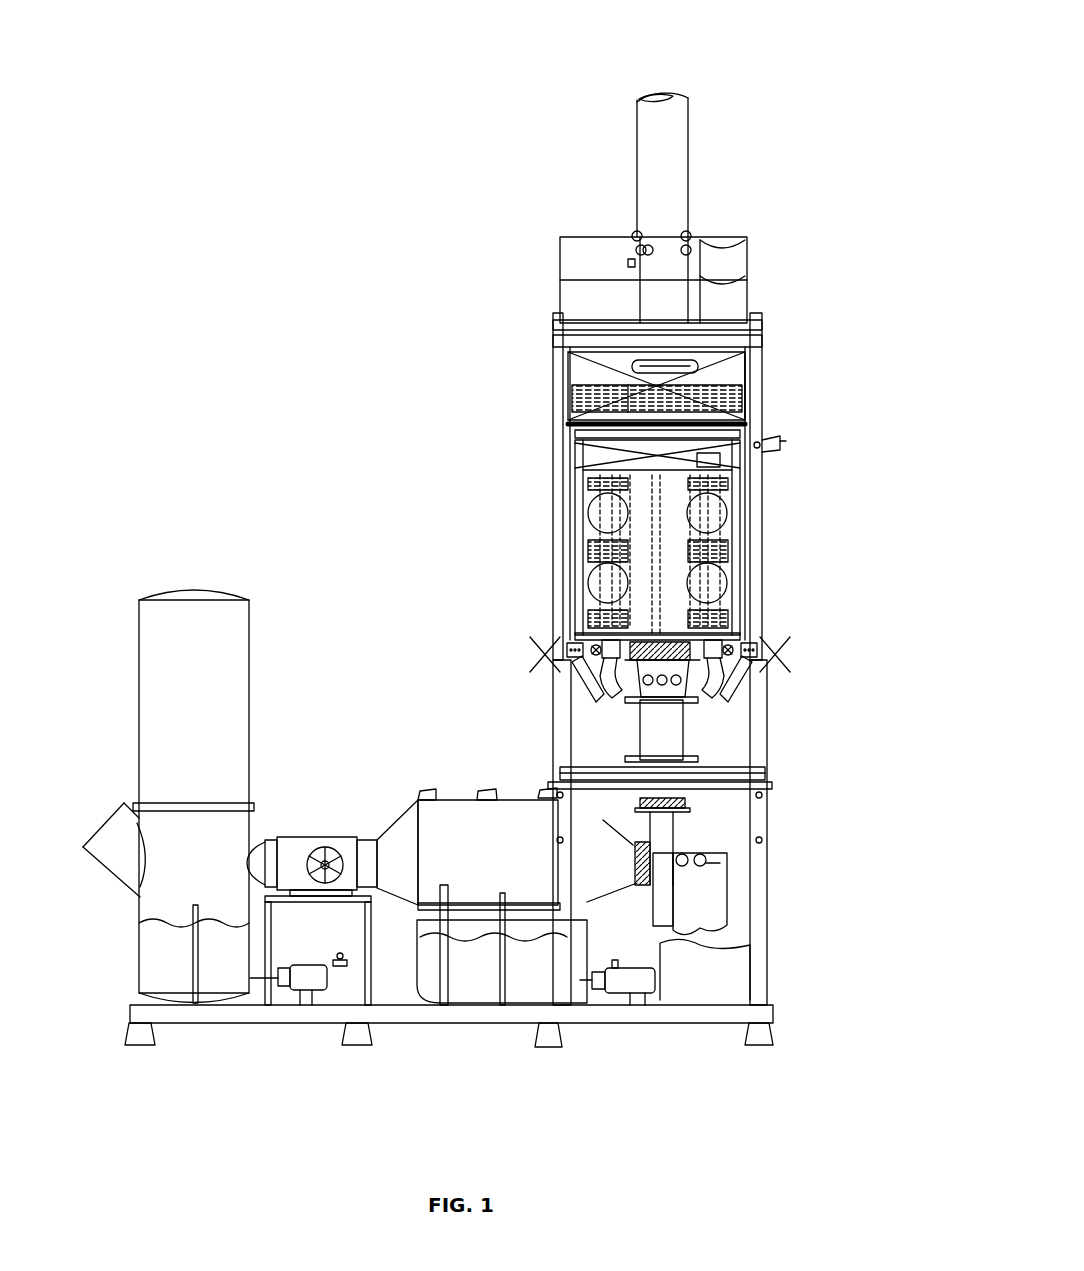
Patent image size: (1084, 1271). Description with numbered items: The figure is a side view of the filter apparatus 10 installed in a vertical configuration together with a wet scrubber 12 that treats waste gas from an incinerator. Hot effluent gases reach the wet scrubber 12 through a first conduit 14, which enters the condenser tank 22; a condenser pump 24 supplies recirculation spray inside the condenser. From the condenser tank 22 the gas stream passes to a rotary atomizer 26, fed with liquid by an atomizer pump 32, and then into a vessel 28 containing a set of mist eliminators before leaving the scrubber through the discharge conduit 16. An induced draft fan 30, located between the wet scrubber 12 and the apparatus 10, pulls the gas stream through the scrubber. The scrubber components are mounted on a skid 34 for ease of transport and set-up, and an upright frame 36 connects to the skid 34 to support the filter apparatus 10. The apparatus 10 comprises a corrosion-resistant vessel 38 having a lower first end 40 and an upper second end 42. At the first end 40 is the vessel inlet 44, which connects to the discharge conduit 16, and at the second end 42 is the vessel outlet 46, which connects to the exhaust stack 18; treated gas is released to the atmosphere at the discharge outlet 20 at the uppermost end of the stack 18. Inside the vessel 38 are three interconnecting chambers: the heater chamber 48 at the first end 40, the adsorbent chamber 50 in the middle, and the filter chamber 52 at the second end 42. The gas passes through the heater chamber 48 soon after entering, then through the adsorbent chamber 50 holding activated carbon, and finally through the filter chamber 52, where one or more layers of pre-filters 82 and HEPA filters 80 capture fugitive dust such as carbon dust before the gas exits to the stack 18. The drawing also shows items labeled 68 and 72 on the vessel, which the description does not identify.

The filter apparatus 10 is at (474, 571).
The wet scrubber 12 is at (392, 812).
The first conduit 14 is at (122, 853).
The discharge conduit 16 is at (674, 828).
The exhaust stack 18 is at (671, 190).
The discharge outlet 20 is at (675, 86).
The condenser tank 22 is at (210, 645).
The condenser pump 24 is at (310, 991).
The rotary atomizer 26 is at (290, 840).
The vessel 28 is at (458, 798).
The induced draft fan 30 is at (657, 885).
The atomizer pump 32 is at (639, 994).
The skid 34 is at (227, 1018).
The upright frame 36 is at (758, 515).
The vessel 38 is at (573, 548).
The first end 40 is at (654, 762).
The second end 42 is at (748, 377).
The vessel inlet 44 is at (771, 782).
The vessel outlet 46 is at (706, 352).
The heater chamber 48 is at (686, 725).
The adsorbent chamber 50 is at (718, 583).
The filter chamber 52 is at (586, 373).
The sensor 68 is at (780, 447).
The spray nozzles 72 is at (729, 673).
The filters 80 is at (569, 408).
The pre-filters 82 is at (566, 429).